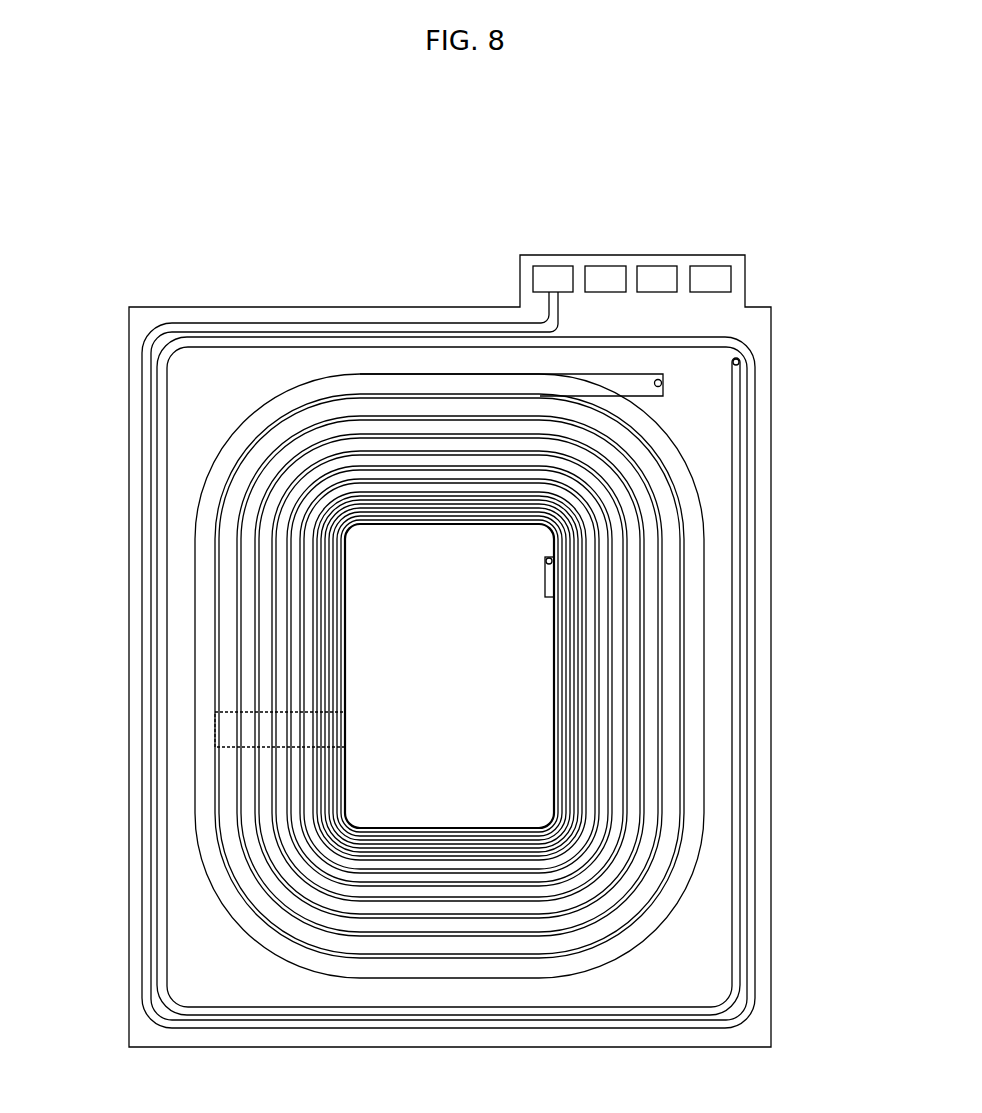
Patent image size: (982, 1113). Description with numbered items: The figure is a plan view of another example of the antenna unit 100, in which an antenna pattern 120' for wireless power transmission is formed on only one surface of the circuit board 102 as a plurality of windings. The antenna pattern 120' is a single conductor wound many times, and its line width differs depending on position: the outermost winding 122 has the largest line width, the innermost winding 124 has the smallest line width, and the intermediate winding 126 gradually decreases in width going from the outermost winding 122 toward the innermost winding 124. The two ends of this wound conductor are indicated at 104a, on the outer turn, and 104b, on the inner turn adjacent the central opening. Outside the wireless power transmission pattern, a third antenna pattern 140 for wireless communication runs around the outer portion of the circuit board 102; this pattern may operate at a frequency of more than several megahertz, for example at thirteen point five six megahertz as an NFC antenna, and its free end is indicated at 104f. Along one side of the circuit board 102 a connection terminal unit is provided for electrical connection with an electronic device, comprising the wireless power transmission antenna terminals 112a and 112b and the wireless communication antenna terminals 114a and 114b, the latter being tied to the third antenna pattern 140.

The antenna unit 100 is at (678, 168).
The circuit board 102 is at (322, 306).
The first end of coil pattern 104a is at (662, 383).
The second end of coil pattern 104b is at (547, 562).
The end of loop pattern 104f is at (741, 362).
The wireless power transmission antenna terminal 112a is at (606, 266).
The wireless power transmission antenna terminal 112b is at (657, 266).
The wireless communication antenna terminal 114a is at (553, 266).
The wireless communication antenna terminal 114b is at (710, 266).
The antenna pattern for wireless power transmission 120' is at (462, 676).
The outermost winding 122 is at (203, 654).
The innermost winding 124 is at (350, 667).
The intermediate winding 126 is at (216, 728).
The third antenna pattern 140 is at (428, 322).